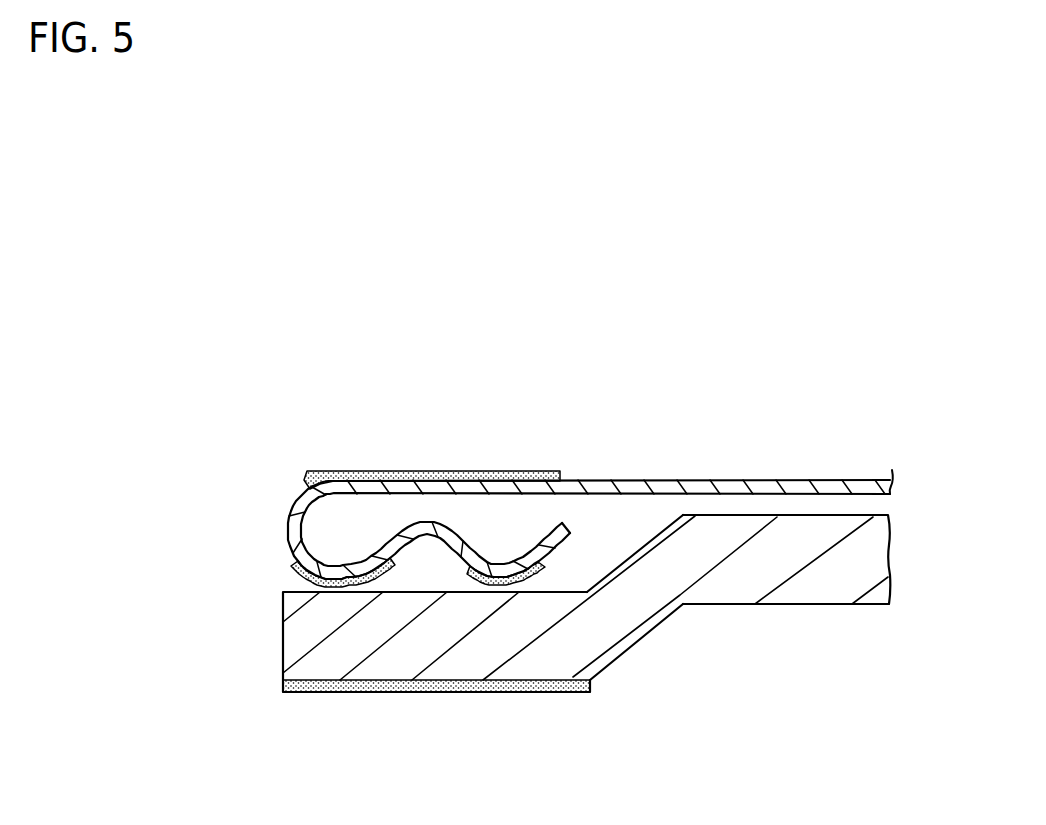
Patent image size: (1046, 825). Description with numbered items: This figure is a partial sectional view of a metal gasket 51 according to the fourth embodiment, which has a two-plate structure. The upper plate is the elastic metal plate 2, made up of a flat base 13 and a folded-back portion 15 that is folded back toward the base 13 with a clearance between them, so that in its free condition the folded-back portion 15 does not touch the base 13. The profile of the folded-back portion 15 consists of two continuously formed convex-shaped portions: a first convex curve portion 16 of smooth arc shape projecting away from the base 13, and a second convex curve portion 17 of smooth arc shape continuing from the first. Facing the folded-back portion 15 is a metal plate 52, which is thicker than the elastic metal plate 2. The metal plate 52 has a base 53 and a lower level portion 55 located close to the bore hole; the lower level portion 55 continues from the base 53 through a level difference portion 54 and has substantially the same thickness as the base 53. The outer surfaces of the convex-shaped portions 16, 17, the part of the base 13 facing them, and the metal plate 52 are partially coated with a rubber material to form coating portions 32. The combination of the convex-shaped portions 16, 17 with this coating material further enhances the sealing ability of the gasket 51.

The elastic metal plate 2 is at (842, 480).
The base 13 is at (663, 479).
The folded-back portion 15 is at (387, 552).
The first convex curve portion 16 is at (347, 565).
The second convex curve portion 17 is at (503, 560).
The coating portion 32 is at (514, 470).
The metal gasket 51 is at (743, 405).
The metal plate 52 is at (848, 608).
The base 53 is at (792, 600).
The level difference portion 54 is at (630, 647).
The lower level portion 55 is at (328, 663).